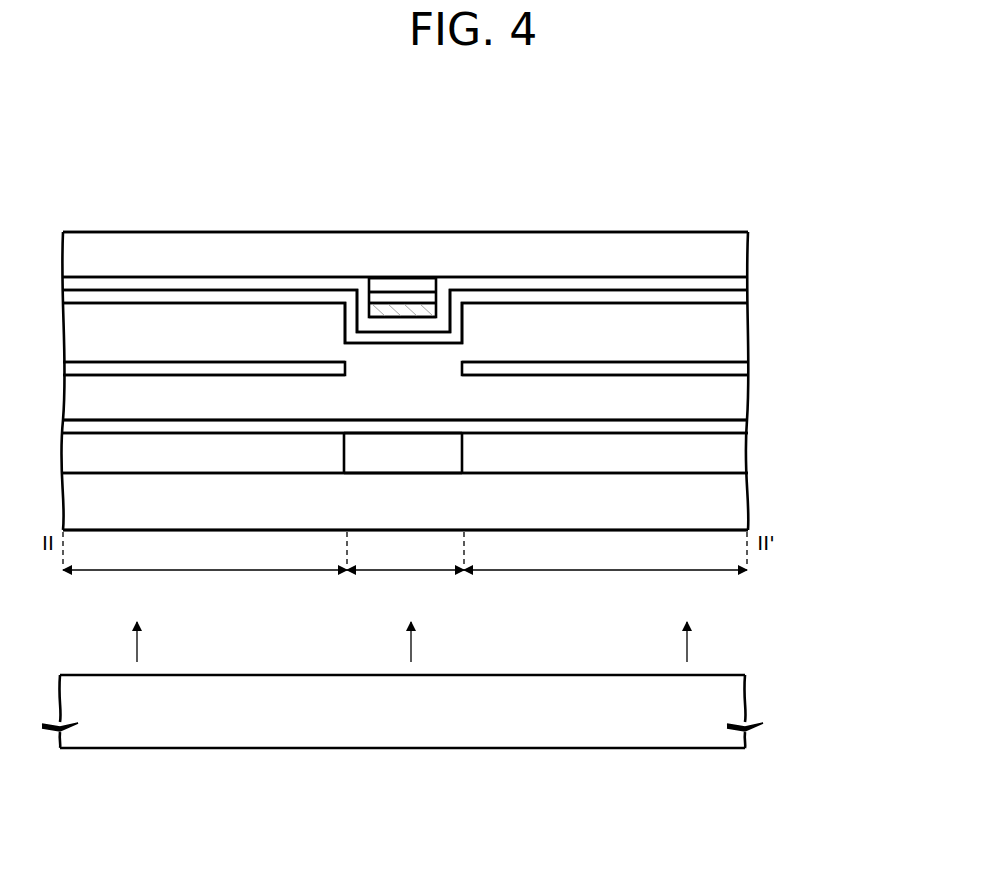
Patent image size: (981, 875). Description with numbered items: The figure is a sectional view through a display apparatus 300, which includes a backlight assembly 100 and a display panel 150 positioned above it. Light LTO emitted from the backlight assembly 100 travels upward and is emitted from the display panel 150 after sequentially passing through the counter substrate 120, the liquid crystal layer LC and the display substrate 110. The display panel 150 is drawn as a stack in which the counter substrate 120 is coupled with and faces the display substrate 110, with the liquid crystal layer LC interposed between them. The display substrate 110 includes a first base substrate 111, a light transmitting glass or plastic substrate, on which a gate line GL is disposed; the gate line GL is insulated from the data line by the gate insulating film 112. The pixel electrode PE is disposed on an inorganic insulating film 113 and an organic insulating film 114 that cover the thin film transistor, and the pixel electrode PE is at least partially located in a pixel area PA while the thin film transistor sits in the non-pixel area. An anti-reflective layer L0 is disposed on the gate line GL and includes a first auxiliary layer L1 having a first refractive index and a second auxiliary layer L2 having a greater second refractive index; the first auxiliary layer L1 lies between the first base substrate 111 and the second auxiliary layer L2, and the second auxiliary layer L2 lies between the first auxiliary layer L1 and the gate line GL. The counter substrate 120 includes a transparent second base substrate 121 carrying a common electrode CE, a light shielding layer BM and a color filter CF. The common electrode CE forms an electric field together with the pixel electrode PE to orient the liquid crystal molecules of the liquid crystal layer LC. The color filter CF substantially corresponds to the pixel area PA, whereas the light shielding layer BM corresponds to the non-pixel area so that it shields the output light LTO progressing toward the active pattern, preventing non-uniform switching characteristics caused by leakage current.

The display apparatus 300 is at (720, 173).
The backlight assembly 100 is at (725, 700).
The display substrate 110 is at (803, 238).
The first base substrate 111 is at (738, 252).
The gate insulating film 112 is at (738, 284).
The inorganic insulating film 113 is at (738, 296).
The organic insulating film 114 is at (738, 338).
The counter substrate 120 is at (803, 417).
The second base substrate 121 is at (738, 504).
The display panel 150 is at (859, 238).
The pixel electrode PE is at (252, 362).
The liquid crystal layer LC is at (738, 404).
The common electrode CE is at (738, 426).
The color filter CF is at (738, 450).
The light shielding layer BM is at (404, 463).
The gate line GL is at (407, 310).
The anti-reflective layer L0 is at (358, 182).
The first auxiliary layer L1 is at (414, 284).
The second auxiliary layer L2 is at (400, 297).
The light LTO is at (137, 639).
The pixel area PA is at (405, 585).